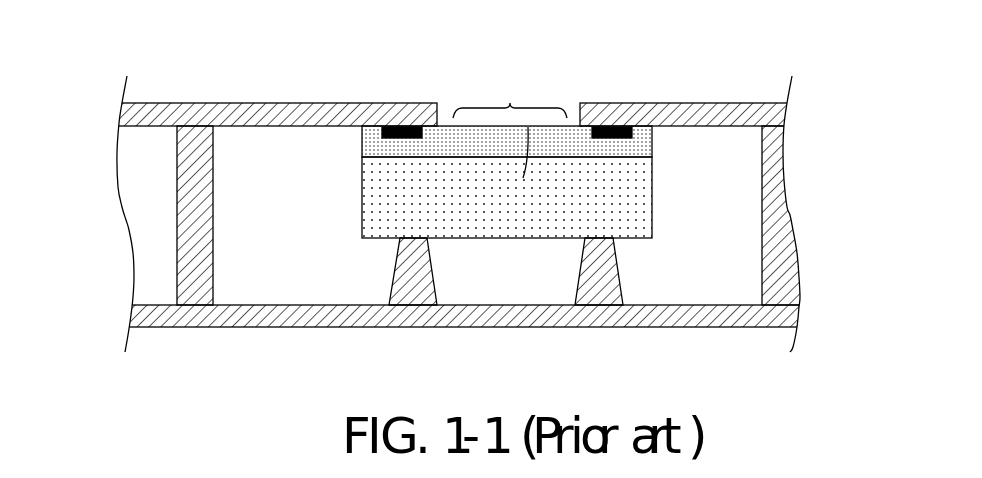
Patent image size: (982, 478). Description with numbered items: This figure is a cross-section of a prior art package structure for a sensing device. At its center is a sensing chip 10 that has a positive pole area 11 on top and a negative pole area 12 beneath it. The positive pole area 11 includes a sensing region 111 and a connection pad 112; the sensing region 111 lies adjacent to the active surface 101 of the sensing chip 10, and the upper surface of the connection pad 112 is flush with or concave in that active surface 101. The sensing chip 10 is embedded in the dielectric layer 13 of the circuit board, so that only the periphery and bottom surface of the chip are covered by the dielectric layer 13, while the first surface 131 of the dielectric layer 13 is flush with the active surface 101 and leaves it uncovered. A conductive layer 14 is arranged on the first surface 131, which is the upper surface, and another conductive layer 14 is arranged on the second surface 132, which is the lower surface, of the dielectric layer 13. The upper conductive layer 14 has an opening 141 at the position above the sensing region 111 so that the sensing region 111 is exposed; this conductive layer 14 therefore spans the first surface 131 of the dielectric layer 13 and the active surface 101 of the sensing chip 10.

The conductive layer 14 is at (121, 113).
The dielectric layer 13 is at (126, 218).
The first surface 131 is at (292, 127).
The second surface 132 is at (292, 305).
The sensing chip 10 is at (557, 182).
The positive pole area 11 is at (653, 140).
The negative pole area 12 is at (703, 140).
The active surface 101 is at (517, 171).
The sensing region 111 is at (510, 92).
The connection pad 112 is at (402, 128).
The opening 141 is at (551, 81).